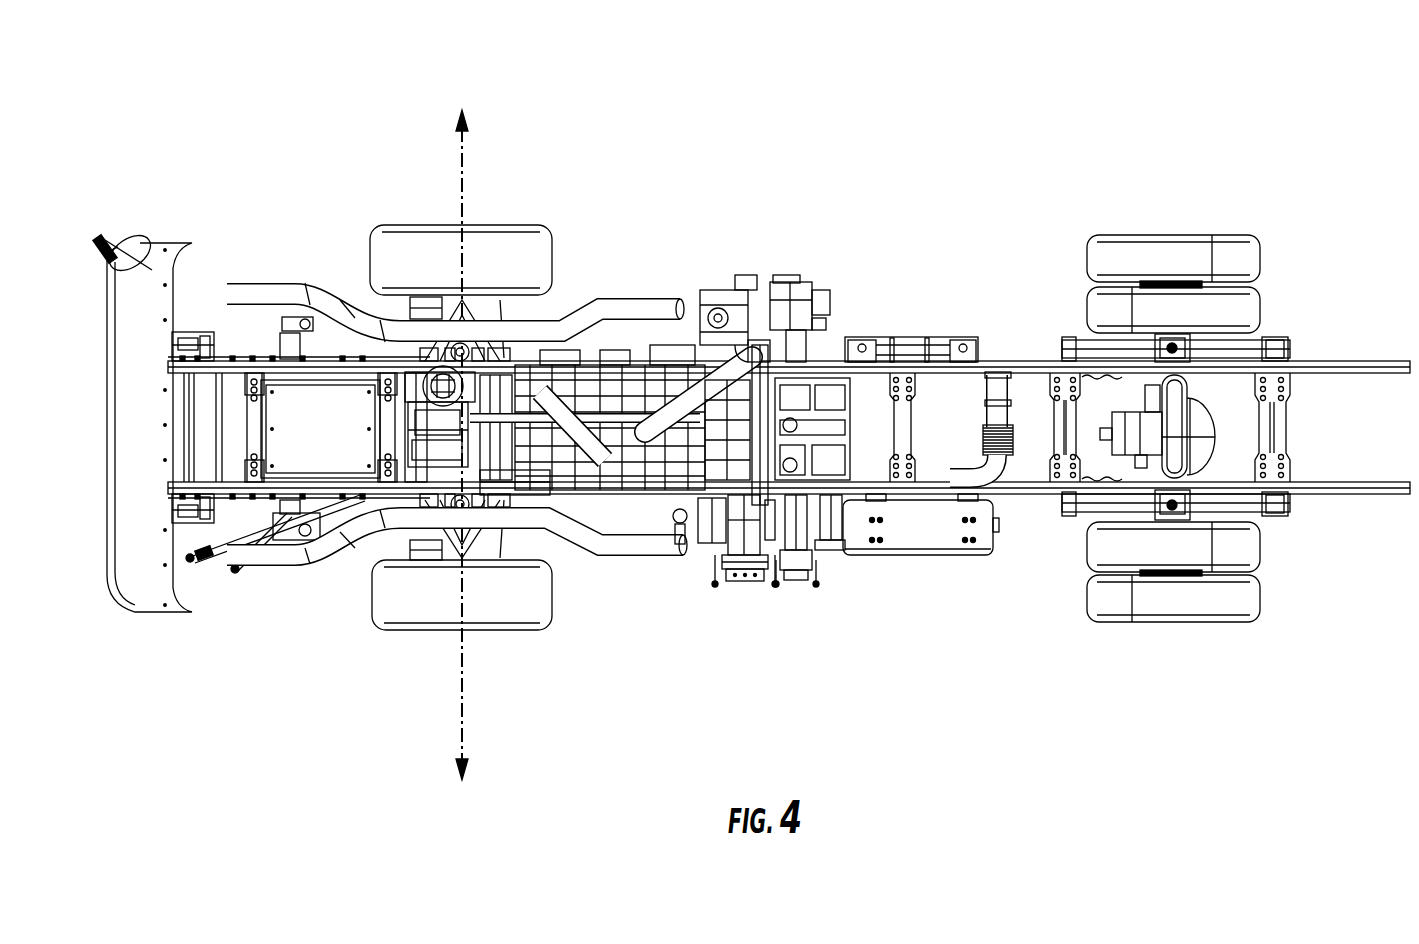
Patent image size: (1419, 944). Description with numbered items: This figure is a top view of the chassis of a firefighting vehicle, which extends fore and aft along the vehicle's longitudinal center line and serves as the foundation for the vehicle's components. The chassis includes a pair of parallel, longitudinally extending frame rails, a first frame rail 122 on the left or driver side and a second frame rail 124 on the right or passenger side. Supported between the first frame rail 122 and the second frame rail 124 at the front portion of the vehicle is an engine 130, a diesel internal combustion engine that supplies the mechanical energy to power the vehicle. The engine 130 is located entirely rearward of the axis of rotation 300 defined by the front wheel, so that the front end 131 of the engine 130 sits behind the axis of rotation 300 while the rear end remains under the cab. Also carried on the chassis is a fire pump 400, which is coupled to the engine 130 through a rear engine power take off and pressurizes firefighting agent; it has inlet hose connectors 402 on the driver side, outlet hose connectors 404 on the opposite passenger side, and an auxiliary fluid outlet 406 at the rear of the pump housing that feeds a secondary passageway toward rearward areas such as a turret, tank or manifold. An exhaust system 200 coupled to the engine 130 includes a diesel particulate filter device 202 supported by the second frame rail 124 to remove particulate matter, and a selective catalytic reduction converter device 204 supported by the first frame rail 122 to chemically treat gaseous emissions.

The first frame rail 122 is at (1356, 486).
The second frame rail 124 is at (1353, 368).
The engine 130 is at (548, 392).
The front end of engine 131 is at (505, 497).
The exhaust system 200 is at (412, 395).
The diesel particulate filter device 202 is at (935, 338).
The selective catalytic reduction converter device 204 is at (997, 535).
The axis of rotation 300 is at (462, 179).
The fire pump 400 is at (774, 262).
The inlet hose connectors 402 is at (747, 582).
The outlet hose connectors 404 is at (795, 582).
The auxiliary fluid outlet 406 is at (833, 505).